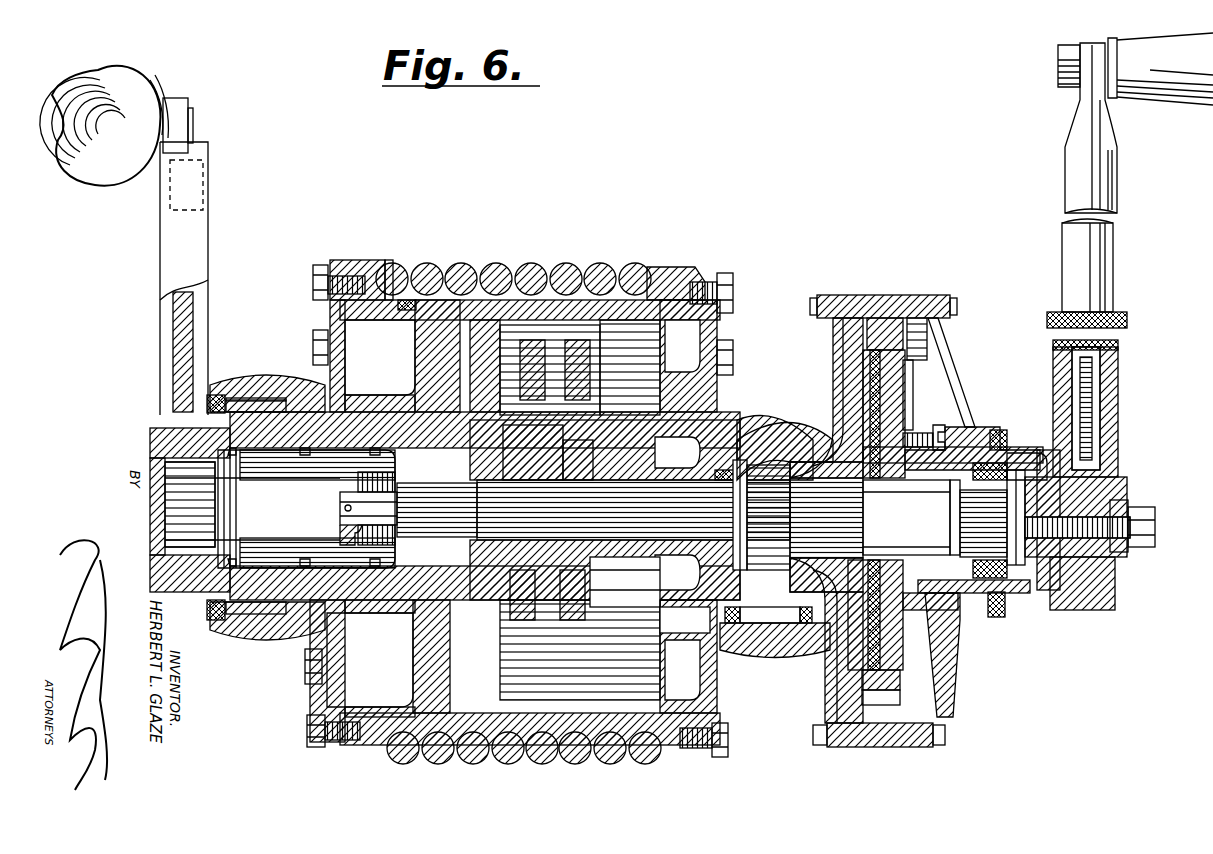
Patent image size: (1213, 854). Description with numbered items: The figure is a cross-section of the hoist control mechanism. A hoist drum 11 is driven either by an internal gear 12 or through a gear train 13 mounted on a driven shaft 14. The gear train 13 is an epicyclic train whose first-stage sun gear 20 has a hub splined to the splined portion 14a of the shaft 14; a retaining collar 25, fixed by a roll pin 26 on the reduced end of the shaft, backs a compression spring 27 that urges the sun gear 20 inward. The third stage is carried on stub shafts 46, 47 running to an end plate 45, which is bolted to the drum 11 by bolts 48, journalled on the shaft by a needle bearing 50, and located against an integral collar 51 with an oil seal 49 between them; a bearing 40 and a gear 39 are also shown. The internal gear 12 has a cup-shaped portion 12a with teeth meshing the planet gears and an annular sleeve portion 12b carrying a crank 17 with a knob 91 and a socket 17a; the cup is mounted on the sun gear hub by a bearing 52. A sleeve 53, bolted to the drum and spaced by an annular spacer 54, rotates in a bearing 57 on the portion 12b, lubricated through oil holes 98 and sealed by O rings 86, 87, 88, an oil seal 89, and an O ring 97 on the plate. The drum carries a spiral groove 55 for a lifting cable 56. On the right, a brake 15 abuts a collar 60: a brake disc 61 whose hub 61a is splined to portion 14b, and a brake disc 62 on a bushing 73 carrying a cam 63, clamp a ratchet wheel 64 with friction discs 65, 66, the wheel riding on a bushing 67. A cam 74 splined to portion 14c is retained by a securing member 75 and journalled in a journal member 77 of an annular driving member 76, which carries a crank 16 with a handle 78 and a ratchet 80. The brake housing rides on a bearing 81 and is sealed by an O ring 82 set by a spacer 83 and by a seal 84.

The hoist drum 11 is at (640, 300).
The internal gear 12 is at (446, 681).
The cup-shaped portion 12a is at (545, 318).
The annular sleeve portion 12b is at (255, 567).
The gear train 13 is at (464, 390).
The driven shaft 14 is at (477, 509).
The splined portion 14a is at (460, 515).
The splined portion 14b is at (840, 530).
The splined portion 14c is at (1005, 465).
The brake 15 is at (947, 407).
The crank 16 is at (1100, 248).
The crank 17 is at (187, 250).
The socket 17a is at (168, 205).
The sun gear 20 is at (385, 540).
The retaining collar 25 is at (345, 478).
The roll pin 26 is at (342, 508).
The compression spring 27 is at (356, 540).
The gear 39 is at (628, 492).
The bearing 40 is at (530, 487).
The end plate 45 is at (708, 335).
The stub shaft 46 is at (644, 367).
The stub shaft 47 is at (688, 656).
The bolts 48 is at (312, 280).
The oil seal 49 is at (725, 484).
The needle bearing 50 is at (680, 575).
The collar 51 is at (745, 520).
The bearing 52 is at (418, 580).
The sleeve 53 is at (345, 302).
The annular spacer 54 is at (445, 600).
The spiral groove 55 is at (385, 272).
The lifting cable 56 is at (430, 265).
The bearing 57 is at (262, 400).
The collar 60 is at (820, 562).
The brake disc 61 is at (838, 375).
The hub 61a is at (828, 372).
The brake disc 62 is at (905, 395).
The cam 63 is at (948, 455).
The ratchet wheel 64 is at (940, 330).
The friction disc 65 is at (855, 380).
The friction disc 66 is at (908, 380).
The bushing 67 is at (925, 590).
The bushing 73 is at (910, 565).
The cam 74 is at (1015, 565).
The securing member 75 is at (1048, 595).
The annular driving member 76 is at (1045, 460).
The journal member 77 is at (985, 595).
The handle 78 is at (1175, 75).
The ratchet 80 is at (1120, 482).
The bearing 81 is at (775, 630).
The O ring 82 is at (740, 612).
The spacer 83 is at (722, 628).
The seal 84 is at (998, 595).
The O ring 86 is at (405, 298).
The O ring 87 is at (310, 632).
The O ring 88 is at (205, 415).
The oil seal 89 is at (205, 610).
The knob 91 is at (132, 97).
The O ring 97 is at (682, 346).
The oil holes 98 is at (255, 448).